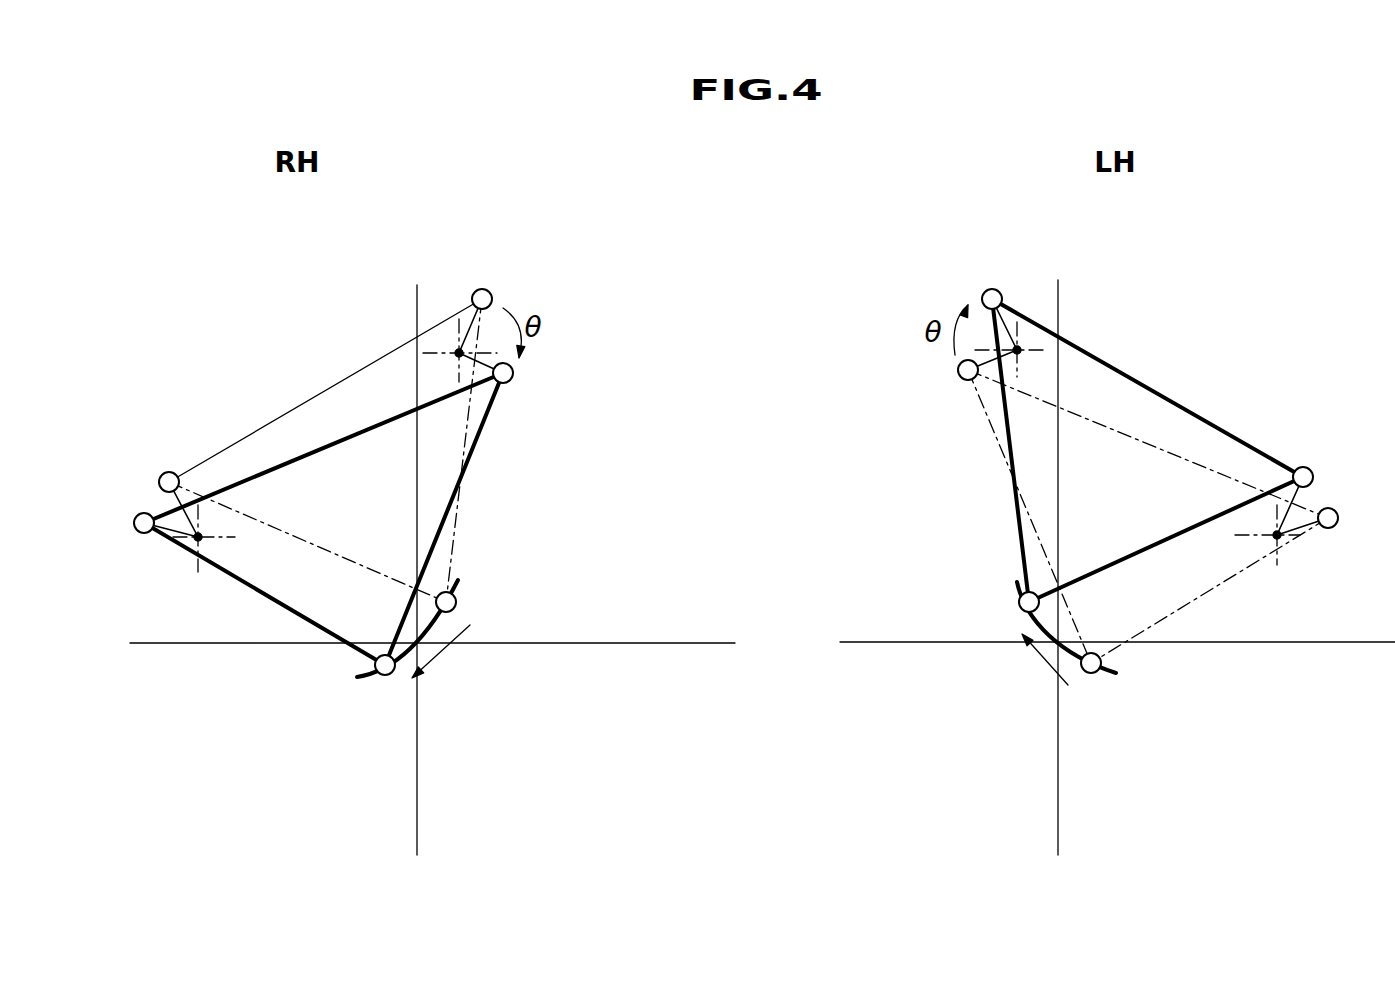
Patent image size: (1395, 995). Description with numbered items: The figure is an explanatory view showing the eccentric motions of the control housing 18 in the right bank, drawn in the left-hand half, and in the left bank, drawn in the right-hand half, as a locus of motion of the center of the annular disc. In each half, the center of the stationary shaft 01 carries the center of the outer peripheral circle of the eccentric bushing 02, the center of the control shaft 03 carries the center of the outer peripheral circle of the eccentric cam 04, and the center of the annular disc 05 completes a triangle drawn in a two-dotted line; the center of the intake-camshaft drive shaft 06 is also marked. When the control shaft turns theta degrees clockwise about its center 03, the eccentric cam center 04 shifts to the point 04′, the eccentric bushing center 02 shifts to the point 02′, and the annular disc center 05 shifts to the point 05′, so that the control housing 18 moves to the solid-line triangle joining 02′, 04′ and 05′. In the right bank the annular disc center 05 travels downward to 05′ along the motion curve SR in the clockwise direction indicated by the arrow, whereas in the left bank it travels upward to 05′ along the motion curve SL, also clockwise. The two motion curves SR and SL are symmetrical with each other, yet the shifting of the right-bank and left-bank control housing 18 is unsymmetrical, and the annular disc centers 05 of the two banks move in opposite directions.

The center of the stationary shaft 01 is at (205, 540).
The center of the outer peripheral circle of the eccentric bushing 02 is at (164, 470).
The shifted center of the eccentric bushing 02′ is at (135, 518).
The center of the control shaft 03 is at (457, 352).
The center of the outer peripheral circle of the eccentric cam 04 is at (488, 290).
The shifted center of the eccentric cam 04′ is at (512, 378).
The center of the annular disc 05 is at (457, 602).
The shifted center of the annular disc 05′ is at (387, 675).
The center of the intake-camshaft drive shaft 06 is at (420, 645).
The control housing 18 is at (470, 462).
The locus of motion of the right-bank annular disc SR is at (365, 677).
The locus of motion of the left-bank annular disc SL is at (1018, 588).